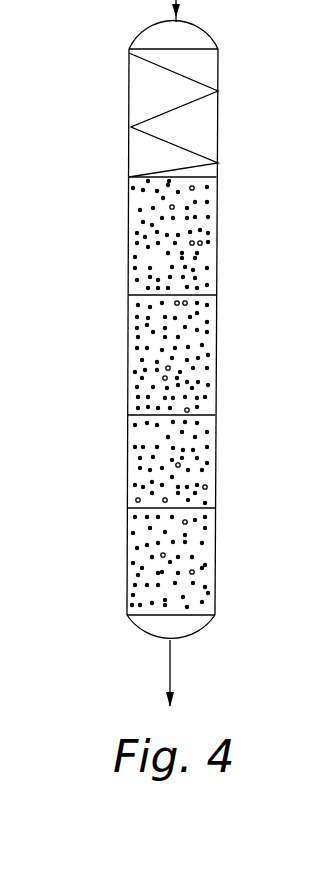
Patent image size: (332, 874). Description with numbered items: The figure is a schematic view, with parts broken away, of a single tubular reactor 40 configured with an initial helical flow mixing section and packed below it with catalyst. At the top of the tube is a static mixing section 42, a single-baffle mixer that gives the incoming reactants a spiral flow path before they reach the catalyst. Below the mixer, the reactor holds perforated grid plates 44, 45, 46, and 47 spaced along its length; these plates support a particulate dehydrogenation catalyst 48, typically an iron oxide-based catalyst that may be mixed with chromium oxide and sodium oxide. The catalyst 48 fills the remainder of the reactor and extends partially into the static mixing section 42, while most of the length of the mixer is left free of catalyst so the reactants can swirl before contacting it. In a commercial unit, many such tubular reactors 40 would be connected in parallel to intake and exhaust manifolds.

The reactor column 40 is at (113, 307).
The static mixing section 42 is at (155, 110).
The perforated grid plate 44 is at (198, 293).
The perforated grid plate 45 is at (197, 413).
The perforated grid plate 46 is at (197, 506).
The perforated grid plate 47 is at (193, 613).
The particulate dehydrogenation catalyst 48 is at (143, 212).